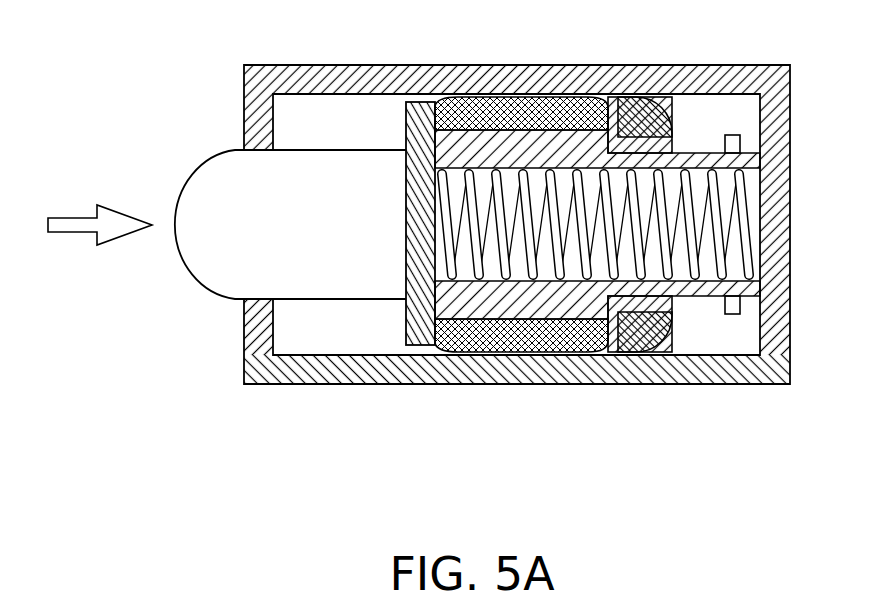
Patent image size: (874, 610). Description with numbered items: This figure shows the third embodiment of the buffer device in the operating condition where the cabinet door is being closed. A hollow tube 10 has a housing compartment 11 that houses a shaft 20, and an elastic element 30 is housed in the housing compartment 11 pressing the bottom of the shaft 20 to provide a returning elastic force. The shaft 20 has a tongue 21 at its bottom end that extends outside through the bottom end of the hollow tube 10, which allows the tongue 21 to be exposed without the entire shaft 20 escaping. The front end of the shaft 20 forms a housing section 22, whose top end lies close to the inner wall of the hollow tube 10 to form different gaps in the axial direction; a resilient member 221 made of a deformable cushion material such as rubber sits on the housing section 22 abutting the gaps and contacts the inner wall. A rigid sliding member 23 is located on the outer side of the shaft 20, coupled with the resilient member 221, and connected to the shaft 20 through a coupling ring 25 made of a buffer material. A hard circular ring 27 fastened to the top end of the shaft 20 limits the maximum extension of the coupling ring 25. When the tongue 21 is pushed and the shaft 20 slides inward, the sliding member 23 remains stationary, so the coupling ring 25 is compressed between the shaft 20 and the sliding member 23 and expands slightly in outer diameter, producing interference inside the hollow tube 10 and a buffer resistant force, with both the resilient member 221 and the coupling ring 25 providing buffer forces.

The hollow tube 10 is at (394, 75).
The housing compartment 11 is at (725, 105).
The shaft 20 is at (415, 323).
The tongue 21 is at (225, 277).
The housing section 22 is at (543, 97).
The sliding member 23 is at (617, 108).
The resilient member 221 is at (668, 106).
The coupling ring 25 is at (497, 93).
The hard circular ring 27 is at (735, 314).
The elastic element 30 is at (723, 260).